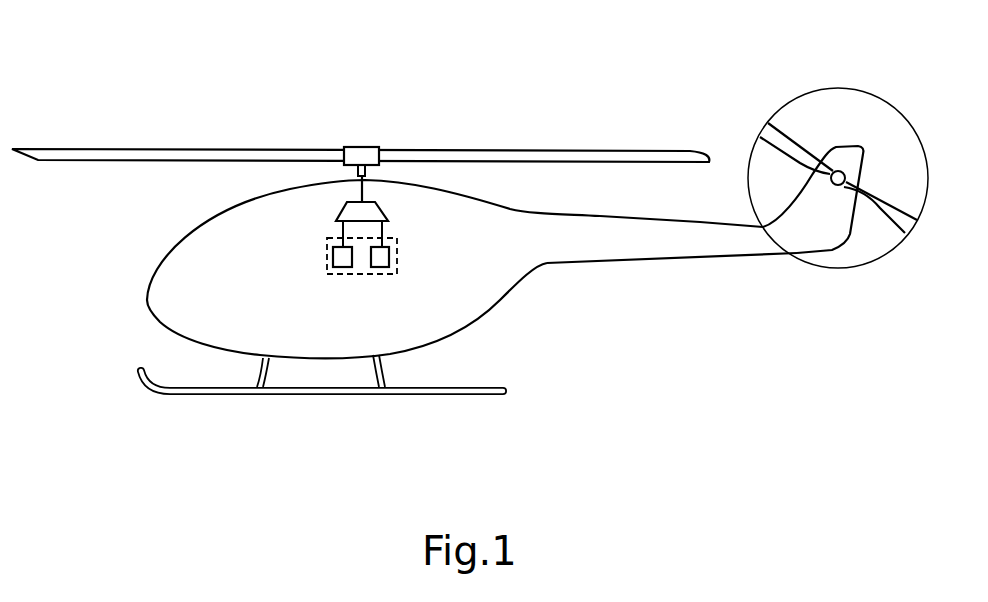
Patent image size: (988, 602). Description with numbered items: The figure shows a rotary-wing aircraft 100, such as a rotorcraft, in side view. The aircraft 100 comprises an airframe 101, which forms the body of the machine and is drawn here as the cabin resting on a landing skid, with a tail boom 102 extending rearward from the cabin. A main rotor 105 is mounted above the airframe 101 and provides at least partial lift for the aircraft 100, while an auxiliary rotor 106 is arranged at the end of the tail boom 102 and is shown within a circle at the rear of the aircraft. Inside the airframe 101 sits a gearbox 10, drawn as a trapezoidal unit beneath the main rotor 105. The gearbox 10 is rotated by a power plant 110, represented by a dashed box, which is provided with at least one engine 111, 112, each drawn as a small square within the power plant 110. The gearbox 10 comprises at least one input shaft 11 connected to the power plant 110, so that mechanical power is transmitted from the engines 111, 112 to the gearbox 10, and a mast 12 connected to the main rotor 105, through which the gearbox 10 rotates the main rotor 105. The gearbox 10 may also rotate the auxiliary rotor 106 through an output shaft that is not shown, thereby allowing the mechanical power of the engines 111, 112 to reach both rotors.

The rotary-wing aircraft 100 is at (612, 373).
The airframe 101 is at (228, 358).
The tail boom 102 is at (640, 263).
The main rotor 105 is at (587, 150).
The auxiliary rotor 106 is at (805, 92).
The gearbox 10 is at (383, 203).
The input shaft 11 is at (382, 228).
The mast 12 is at (337, 193).
The power plant 110 is at (352, 274).
The engine 111 is at (327, 257).
The engine 112 is at (389, 257).